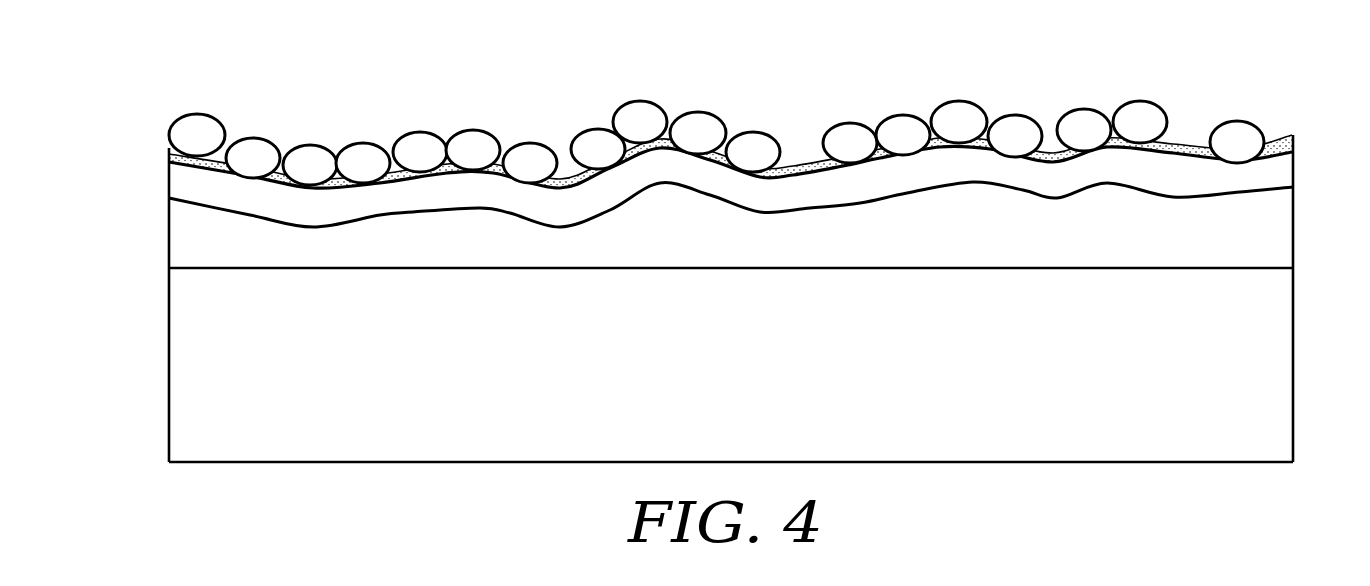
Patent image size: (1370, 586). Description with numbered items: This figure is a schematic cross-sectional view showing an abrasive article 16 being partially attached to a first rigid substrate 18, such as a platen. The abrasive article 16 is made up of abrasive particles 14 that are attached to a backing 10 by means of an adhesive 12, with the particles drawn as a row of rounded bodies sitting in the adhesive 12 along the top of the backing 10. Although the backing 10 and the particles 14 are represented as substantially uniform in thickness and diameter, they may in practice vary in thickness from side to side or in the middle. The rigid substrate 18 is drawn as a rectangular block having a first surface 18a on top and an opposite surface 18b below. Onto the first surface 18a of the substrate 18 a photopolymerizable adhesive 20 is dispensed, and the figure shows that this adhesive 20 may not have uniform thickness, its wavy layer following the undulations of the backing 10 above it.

The backing 10 is at (1280, 173).
The adhesive 12 is at (1281, 143).
The abrasive particles 14 is at (1070, 122).
The abrasive article 16 is at (163, 118).
The first rigid substrate 18 is at (1272, 360).
The first surface 18a is at (188, 268).
The second major surface of substrate 18b is at (193, 463).
The photopolymerizable adhesive 20 is at (1280, 237).